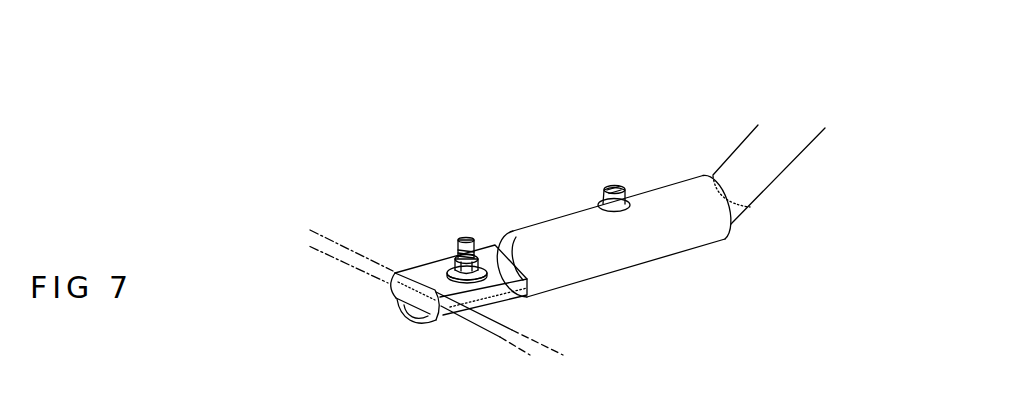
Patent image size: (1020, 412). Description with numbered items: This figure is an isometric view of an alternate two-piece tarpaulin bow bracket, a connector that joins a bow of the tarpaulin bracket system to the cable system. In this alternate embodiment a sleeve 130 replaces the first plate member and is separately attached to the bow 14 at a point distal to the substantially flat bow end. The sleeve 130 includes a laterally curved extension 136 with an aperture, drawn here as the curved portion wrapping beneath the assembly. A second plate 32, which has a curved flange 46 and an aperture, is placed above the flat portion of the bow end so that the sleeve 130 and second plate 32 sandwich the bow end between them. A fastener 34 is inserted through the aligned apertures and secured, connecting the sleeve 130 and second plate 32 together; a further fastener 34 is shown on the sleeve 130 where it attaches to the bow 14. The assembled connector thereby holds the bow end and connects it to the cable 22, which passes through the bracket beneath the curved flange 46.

The bow 14 is at (803, 135).
The cable 22 is at (330, 246).
The second plate 32 is at (417, 260).
The fastener 34 is at (618, 186).
The curved flange 46 is at (400, 288).
The sleeve 130 is at (623, 258).
The laterally curved extension 136 is at (429, 328).